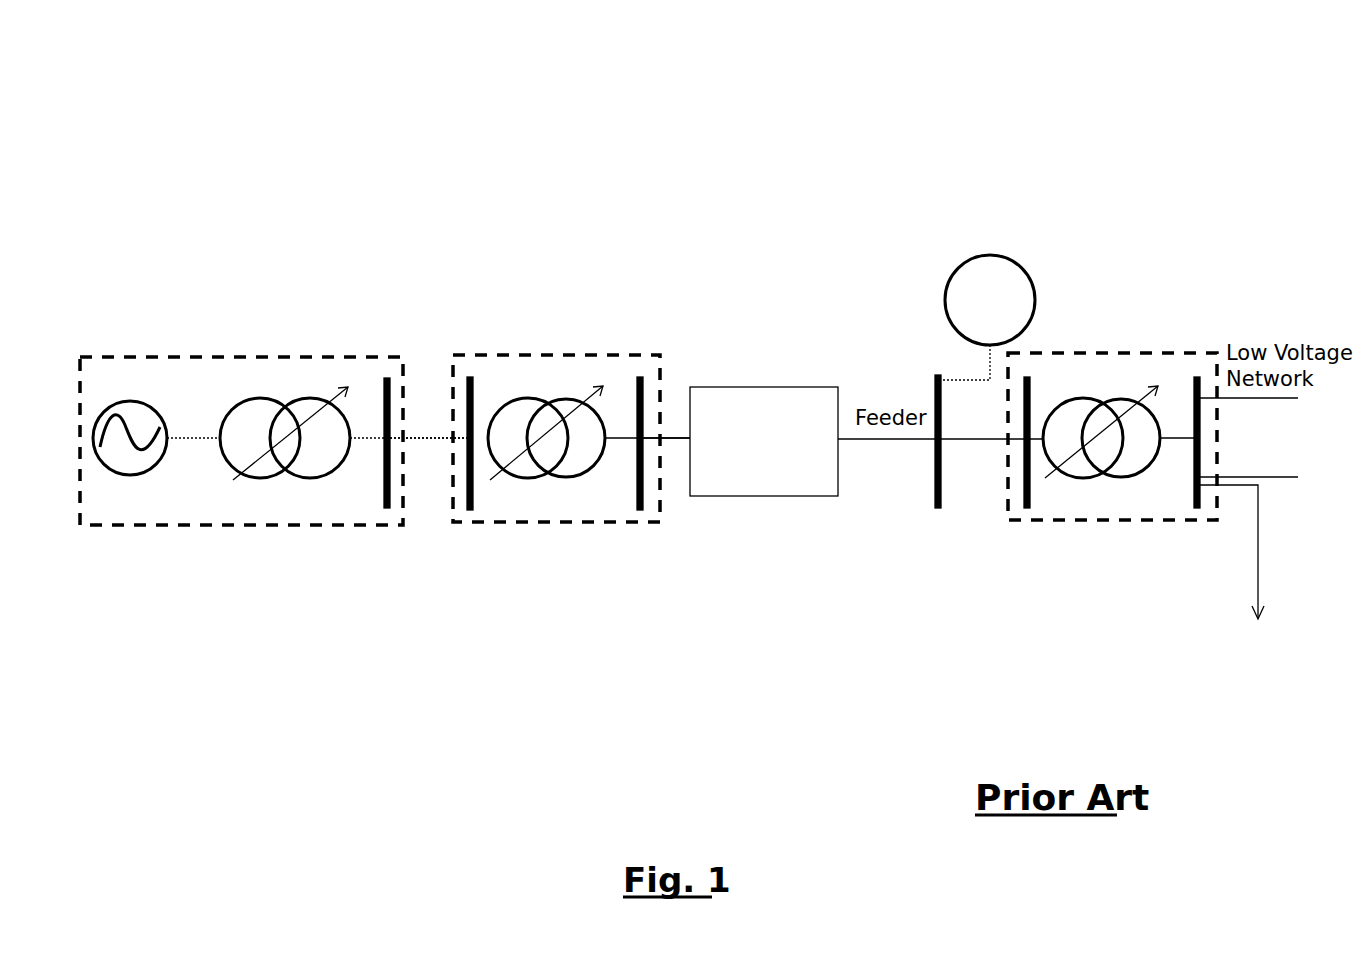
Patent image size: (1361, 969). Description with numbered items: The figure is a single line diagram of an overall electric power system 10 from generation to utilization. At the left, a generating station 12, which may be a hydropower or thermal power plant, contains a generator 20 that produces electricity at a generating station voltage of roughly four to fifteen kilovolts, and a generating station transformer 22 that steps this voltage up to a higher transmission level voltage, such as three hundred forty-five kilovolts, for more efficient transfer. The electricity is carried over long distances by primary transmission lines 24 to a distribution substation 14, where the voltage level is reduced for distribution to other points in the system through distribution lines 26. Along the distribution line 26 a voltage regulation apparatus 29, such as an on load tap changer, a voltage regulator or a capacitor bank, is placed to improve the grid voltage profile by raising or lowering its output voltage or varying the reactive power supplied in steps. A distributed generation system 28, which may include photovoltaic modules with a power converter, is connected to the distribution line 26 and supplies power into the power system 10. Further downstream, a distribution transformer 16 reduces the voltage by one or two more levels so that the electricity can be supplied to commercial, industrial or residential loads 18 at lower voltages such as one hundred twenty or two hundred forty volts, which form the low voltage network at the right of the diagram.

The electric power system 10 is at (1322, 48).
The generating station 12 is at (241, 403).
The distribution substation 14 is at (556, 422).
The distribution transformer 16 is at (1112, 417).
The loads 18 is at (1252, 552).
The generator 20 is at (130, 423).
The generating station transformer 22 is at (285, 426).
The primary transmission lines 24 is at (428, 436).
The distribution lines 26 is at (682, 442).
The distributed generation system 28 is at (988, 300).
The voltage regulation apparatus 29 is at (764, 427).